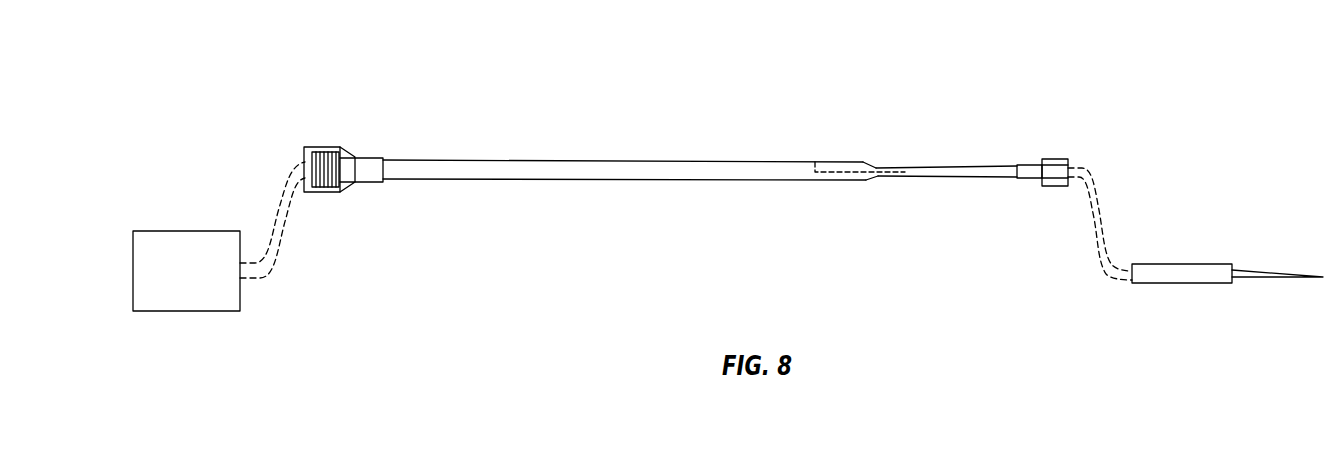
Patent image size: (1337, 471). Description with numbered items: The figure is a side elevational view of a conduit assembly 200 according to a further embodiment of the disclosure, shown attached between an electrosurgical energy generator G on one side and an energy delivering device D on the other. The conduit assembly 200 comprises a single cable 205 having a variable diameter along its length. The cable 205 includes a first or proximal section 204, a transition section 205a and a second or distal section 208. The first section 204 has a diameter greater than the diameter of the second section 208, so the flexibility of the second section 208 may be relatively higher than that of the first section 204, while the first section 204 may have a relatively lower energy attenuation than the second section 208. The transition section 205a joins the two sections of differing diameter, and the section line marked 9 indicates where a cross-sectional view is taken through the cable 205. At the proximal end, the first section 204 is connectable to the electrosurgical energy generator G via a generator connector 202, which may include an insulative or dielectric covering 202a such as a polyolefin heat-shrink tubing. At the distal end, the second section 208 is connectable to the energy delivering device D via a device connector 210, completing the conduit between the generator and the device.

The conduit assembly 200 is at (628, 68).
The generator connector 202 is at (325, 177).
The insulative or dielectric covering 202a is at (327, 146).
The first or proximal section 204 is at (493, 187).
The single cable 205 is at (624, 154).
The transition section 205a is at (868, 192).
The second or distal section 208 is at (958, 187).
The device connector 210 is at (1055, 152).
The section line for FIG. 9 is at (814, 118).
The electrosurgical energy generator G is at (187, 223).
The energy delivering device D is at (1230, 243).